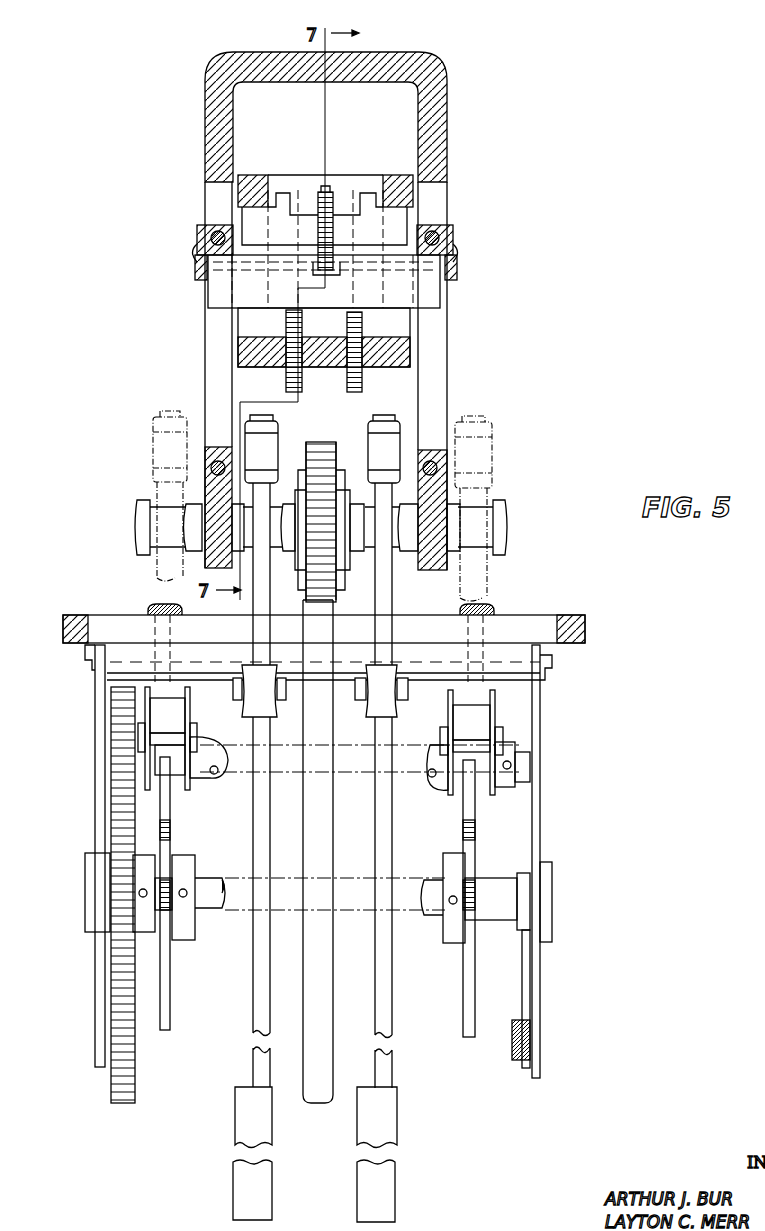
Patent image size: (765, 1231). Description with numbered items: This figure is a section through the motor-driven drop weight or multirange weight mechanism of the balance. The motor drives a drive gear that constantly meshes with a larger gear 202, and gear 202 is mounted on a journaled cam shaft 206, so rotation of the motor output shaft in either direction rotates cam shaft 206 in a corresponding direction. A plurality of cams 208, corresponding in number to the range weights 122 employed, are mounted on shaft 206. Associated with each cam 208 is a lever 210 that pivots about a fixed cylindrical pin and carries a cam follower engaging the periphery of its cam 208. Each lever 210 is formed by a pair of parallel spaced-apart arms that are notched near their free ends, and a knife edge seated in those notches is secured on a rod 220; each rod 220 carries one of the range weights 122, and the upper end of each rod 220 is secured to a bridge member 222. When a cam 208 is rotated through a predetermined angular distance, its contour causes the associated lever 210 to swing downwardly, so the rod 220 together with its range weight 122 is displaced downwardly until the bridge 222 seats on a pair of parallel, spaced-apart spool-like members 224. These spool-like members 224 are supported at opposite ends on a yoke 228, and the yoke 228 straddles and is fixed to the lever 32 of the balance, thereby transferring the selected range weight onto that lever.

The lever 32 is at (262, 178).
The range weight 122 is at (235, 1120).
The gear 202 is at (122, 996).
The cam shaft 206 is at (212, 880).
The cam 208 is at (170, 980).
The lever 210 is at (200, 790).
The rod 220 is at (248, 992).
The bridge member 222 is at (153, 440).
The spool-like member 224 is at (478, 528).
The yoke 228 is at (205, 150).